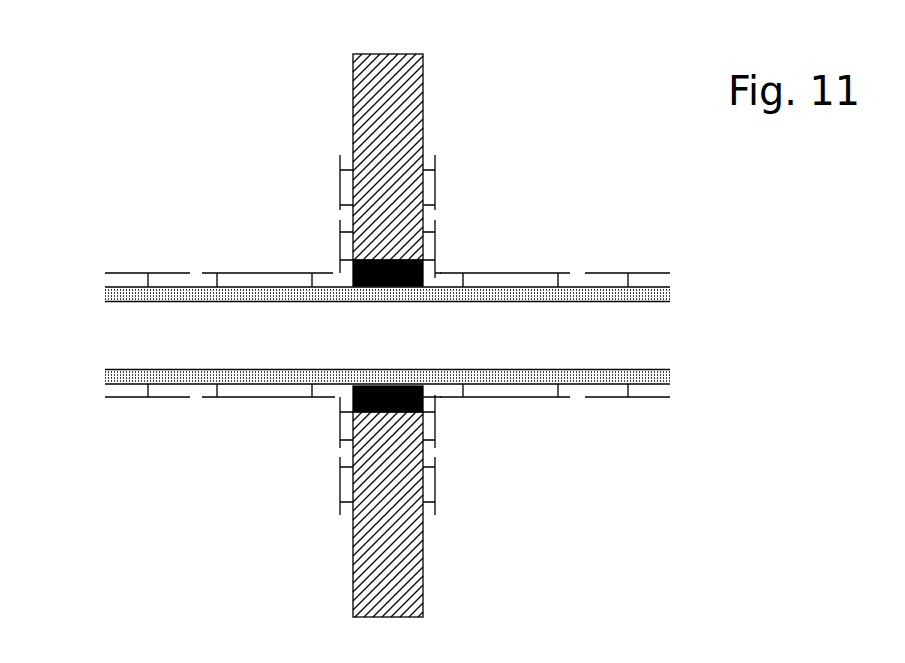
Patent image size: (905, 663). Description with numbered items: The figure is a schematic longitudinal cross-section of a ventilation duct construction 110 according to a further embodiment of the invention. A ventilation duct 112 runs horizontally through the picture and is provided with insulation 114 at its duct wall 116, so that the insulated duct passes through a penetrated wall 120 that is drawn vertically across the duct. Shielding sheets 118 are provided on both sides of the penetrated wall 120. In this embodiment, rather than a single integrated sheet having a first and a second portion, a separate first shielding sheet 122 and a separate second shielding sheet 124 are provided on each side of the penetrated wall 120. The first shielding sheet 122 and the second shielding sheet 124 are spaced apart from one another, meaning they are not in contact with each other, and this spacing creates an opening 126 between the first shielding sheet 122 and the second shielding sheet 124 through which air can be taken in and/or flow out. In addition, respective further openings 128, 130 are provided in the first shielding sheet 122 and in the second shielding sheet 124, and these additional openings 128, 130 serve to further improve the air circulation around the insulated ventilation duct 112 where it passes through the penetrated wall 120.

The ventilation duct construction 110 is at (183, 73).
The ventilation duct 112 is at (162, 330).
The insulation 114 is at (600, 380).
The duct wall 116 is at (627, 370).
The shielding sheets 118 is at (326, 246).
The penetrated wall 120 is at (423, 93).
The first shielding sheet 122 is at (243, 273).
The second shielding sheet 124 is at (340, 172).
The opening 126 is at (326, 402).
The additional opening 128 is at (197, 397).
The additional opening 130 is at (338, 455).